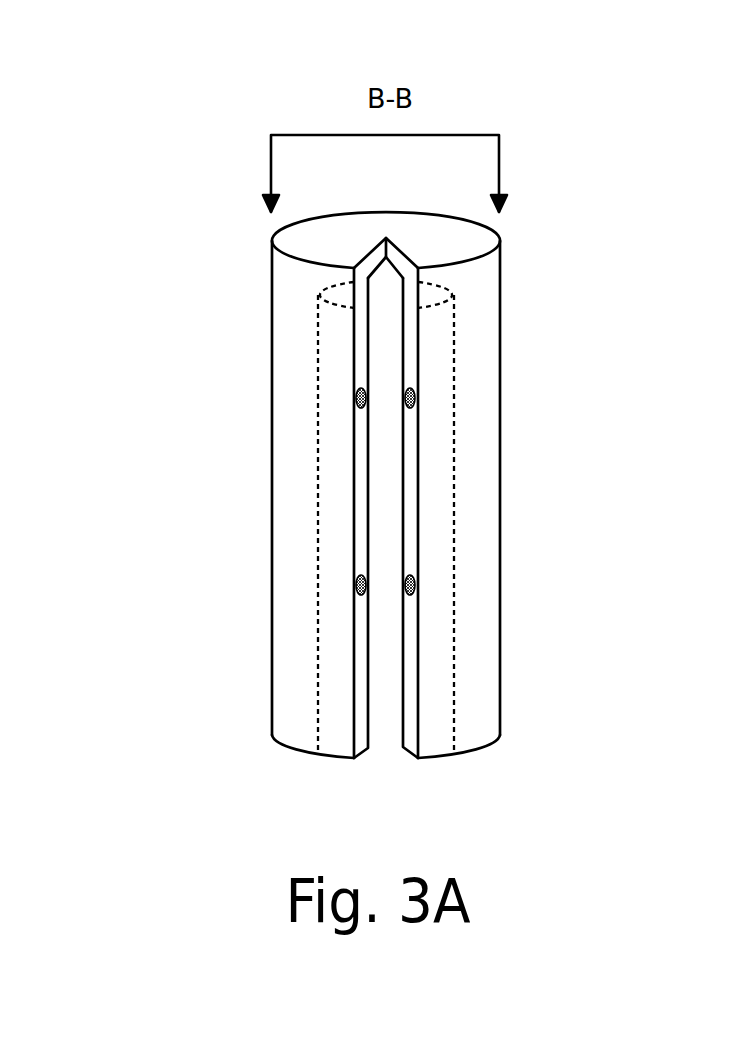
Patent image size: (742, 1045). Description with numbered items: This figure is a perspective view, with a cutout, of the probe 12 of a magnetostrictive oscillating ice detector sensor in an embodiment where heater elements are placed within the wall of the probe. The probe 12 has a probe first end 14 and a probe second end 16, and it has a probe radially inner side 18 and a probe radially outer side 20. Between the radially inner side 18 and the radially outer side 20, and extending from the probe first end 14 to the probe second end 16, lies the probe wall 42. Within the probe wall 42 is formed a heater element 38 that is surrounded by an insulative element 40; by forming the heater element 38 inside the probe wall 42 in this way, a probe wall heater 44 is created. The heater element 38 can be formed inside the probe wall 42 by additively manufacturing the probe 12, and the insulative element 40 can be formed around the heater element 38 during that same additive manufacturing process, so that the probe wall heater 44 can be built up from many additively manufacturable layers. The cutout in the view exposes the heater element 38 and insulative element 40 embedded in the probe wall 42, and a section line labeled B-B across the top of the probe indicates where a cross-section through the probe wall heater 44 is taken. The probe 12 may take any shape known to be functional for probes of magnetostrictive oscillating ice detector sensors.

The probe 12 is at (285, 327).
The probe first end 14 is at (273, 235).
The probe second end 16 is at (275, 733).
The probe radially inner side 18 is at (370, 497).
The probe radially outer side 20 is at (475, 538).
The heater element 38 is at (416, 396).
The insulative element 40 is at (414, 389).
The probe wall 42 is at (410, 543).
The probe wall heater 44 is at (603, 130).